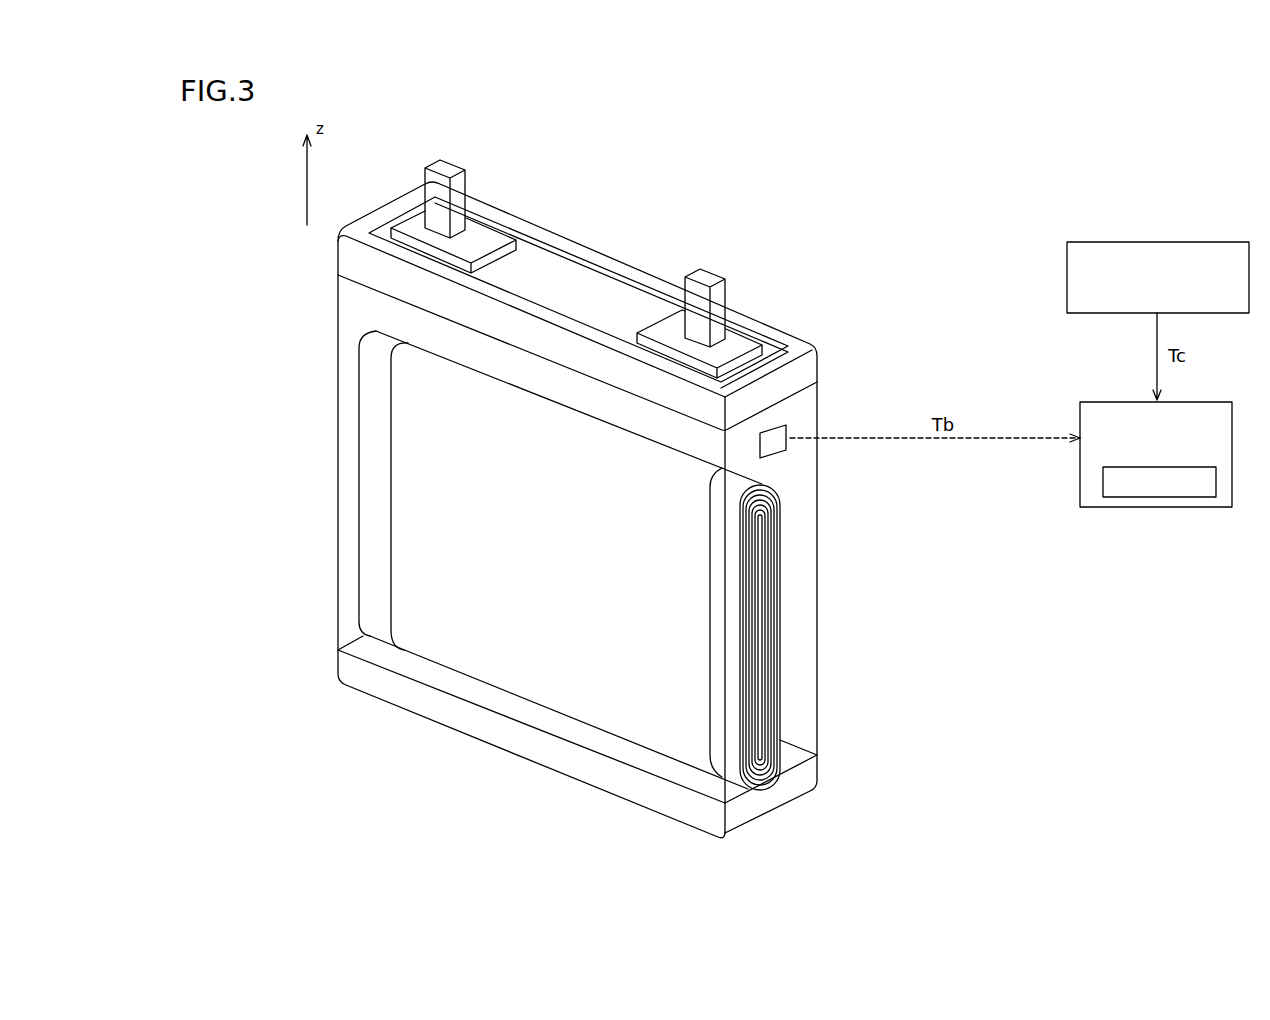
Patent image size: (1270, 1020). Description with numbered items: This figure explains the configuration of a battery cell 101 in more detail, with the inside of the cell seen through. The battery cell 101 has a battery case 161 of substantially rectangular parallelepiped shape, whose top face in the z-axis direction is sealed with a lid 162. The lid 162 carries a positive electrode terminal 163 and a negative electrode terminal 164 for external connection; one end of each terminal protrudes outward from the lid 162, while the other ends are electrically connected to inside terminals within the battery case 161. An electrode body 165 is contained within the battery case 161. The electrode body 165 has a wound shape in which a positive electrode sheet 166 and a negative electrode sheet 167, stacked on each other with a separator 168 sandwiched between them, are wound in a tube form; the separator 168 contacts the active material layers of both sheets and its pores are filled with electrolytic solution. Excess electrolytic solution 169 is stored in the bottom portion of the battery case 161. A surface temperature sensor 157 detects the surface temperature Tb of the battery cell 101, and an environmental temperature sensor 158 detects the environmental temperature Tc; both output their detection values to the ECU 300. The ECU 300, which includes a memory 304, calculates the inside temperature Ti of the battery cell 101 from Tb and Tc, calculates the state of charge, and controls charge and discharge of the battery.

The battery cell 101 is at (714, 171).
The surface temperature sensor 157 is at (788, 447).
The environmental temperature sensor 158 is at (1205, 241).
The battery case 161 is at (630, 248).
The lid 162 is at (797, 340).
The positive electrode terminal 163 is at (443, 168).
The negative electrode terminal 164 is at (704, 272).
The electrode body 165 is at (458, 683).
The positive electrode sheet 166 is at (373, 487).
The negative electrode sheet 167 is at (733, 627).
The separator 168 is at (595, 665).
The excess electrolytic solution 169 is at (810, 753).
The ECU 300 is at (1215, 402).
The memory 304 is at (1155, 498).